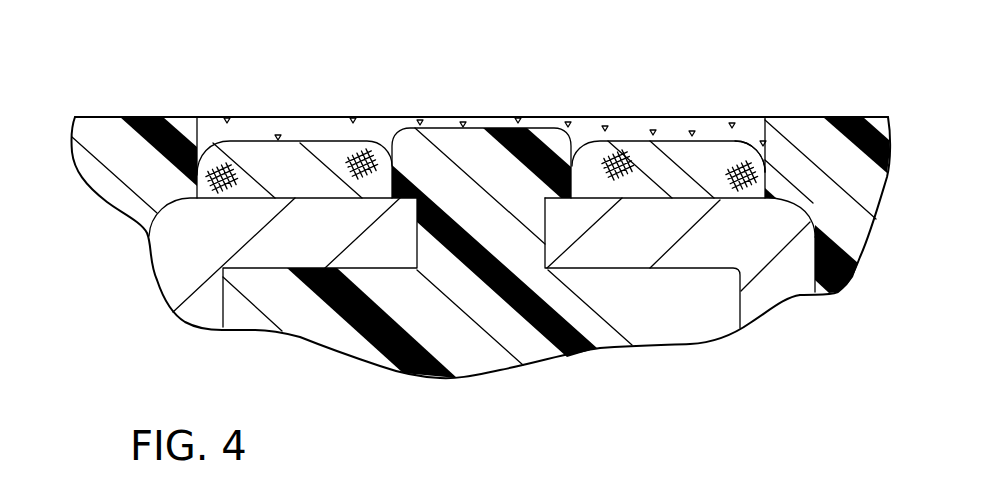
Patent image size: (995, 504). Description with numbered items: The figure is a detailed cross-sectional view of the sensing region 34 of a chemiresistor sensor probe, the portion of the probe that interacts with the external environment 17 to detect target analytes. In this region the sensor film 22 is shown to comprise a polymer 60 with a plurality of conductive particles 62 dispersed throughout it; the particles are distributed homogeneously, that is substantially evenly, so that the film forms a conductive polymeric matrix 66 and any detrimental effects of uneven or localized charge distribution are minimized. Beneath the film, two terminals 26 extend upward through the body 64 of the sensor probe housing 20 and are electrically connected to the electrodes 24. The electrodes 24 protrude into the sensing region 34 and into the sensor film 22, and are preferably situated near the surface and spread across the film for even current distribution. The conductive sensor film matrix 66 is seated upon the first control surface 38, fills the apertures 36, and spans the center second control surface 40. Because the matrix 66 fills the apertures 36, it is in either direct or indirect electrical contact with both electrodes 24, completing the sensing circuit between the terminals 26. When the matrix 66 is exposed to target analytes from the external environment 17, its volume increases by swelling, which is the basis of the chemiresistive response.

The sensing region 34 is at (207, 55).
The first control surface 38 is at (92, 117).
The electrodes 24 is at (243, 160).
The conductive particles 62 is at (243, 120).
The polymer 60 is at (387, 126).
The second control surface 40 is at (498, 126).
The external environment 17 is at (598, 103).
The apertures 36 is at (632, 128).
The conductive polymeric matrix 66 is at (676, 128).
The sensor film 22 is at (753, 121).
The sensor probe housing 20 is at (113, 190).
The terminals 26 is at (185, 262).
The body 64 is at (672, 325).